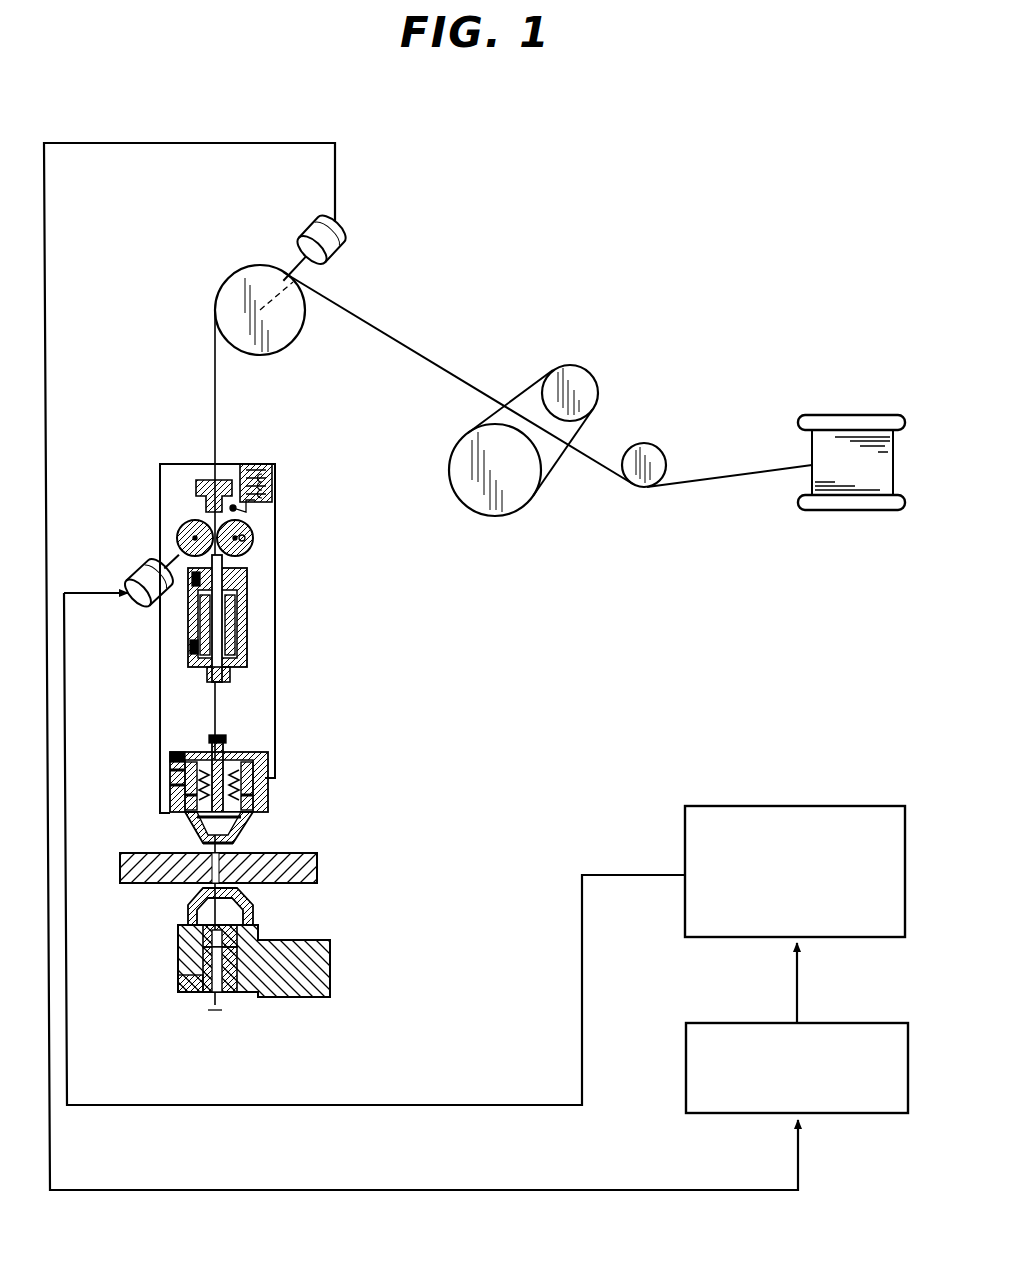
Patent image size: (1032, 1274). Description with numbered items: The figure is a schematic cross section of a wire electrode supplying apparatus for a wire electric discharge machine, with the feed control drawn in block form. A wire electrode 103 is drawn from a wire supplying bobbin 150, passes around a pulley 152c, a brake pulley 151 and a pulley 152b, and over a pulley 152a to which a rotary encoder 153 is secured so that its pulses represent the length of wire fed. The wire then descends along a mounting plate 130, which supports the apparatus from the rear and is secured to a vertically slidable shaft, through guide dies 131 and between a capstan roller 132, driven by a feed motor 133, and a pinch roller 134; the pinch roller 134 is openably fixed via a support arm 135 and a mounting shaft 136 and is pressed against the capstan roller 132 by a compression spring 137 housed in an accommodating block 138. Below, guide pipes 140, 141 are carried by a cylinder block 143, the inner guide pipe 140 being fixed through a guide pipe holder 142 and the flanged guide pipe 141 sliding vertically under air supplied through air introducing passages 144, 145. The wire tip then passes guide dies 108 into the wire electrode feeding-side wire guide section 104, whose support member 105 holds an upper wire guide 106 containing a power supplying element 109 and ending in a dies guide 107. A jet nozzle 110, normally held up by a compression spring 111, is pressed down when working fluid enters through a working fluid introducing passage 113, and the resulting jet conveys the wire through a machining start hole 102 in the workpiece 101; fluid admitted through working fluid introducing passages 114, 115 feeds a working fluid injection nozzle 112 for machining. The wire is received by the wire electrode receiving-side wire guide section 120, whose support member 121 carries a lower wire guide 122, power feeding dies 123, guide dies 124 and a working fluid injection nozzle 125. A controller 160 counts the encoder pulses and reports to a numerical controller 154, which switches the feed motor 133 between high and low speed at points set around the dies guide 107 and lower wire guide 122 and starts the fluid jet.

The workpiece 101 is at (317, 862).
The machining start hole 102 is at (215, 872).
The wire electrode 103 is at (215, 400).
The wire electrode feeding-side wire guide section 104 is at (265, 766).
The support member 105 is at (268, 790).
The upper wire guide 106 is at (250, 752).
The dies guide 107 is at (250, 830).
The guide dies 108 is at (235, 748).
The power supplying element 109 is at (205, 752).
The jet nozzle 110 is at (195, 825).
The compression spring 111 is at (262, 800).
The working fluid injection nozzle 112 is at (203, 843).
The working fluid introducing passage 113 is at (178, 753).
The working fluid introducing passage 114 is at (185, 790).
The working fluid introducing passage 115 is at (170, 780).
The wire electrode receiving-side wire guide section 120 is at (265, 961).
The support member 121 is at (320, 940).
The lower wire guide 122 is at (205, 940).
The power feeding dies 123 is at (205, 970).
The guide dies 124 is at (195, 992).
The working fluid injection nozzle 125 is at (253, 905).
The mounting plate 130 is at (230, 463).
The guide dies 131 is at (200, 478).
The capstan roller 132 is at (180, 522).
The feed motor 133 is at (140, 572).
The pinch roller 134 is at (253, 545).
The support arm 135 is at (250, 540).
The mounting shaft 136 is at (240, 510).
The compression spring 137 is at (265, 486).
The accommodating block 138 is at (272, 466).
The guide pipe 140 is at (247, 580).
The guide pipe 141 is at (232, 680).
The guide pipe holder 142 is at (226, 572).
The cylinder block 143 is at (248, 620).
The air introducing passage 144 is at (190, 598).
The air introducing passage 145 is at (188, 640).
The wire supplying bobbin 150 is at (835, 415).
The brake pulley 151 is at (488, 517).
The pulley 152a is at (235, 277).
The pulley 152b is at (580, 366).
The pulley 152c is at (648, 443).
The rotary encoder 153 is at (343, 256).
The numerical controller 154 is at (685, 832).
The controller 160 is at (686, 1035).